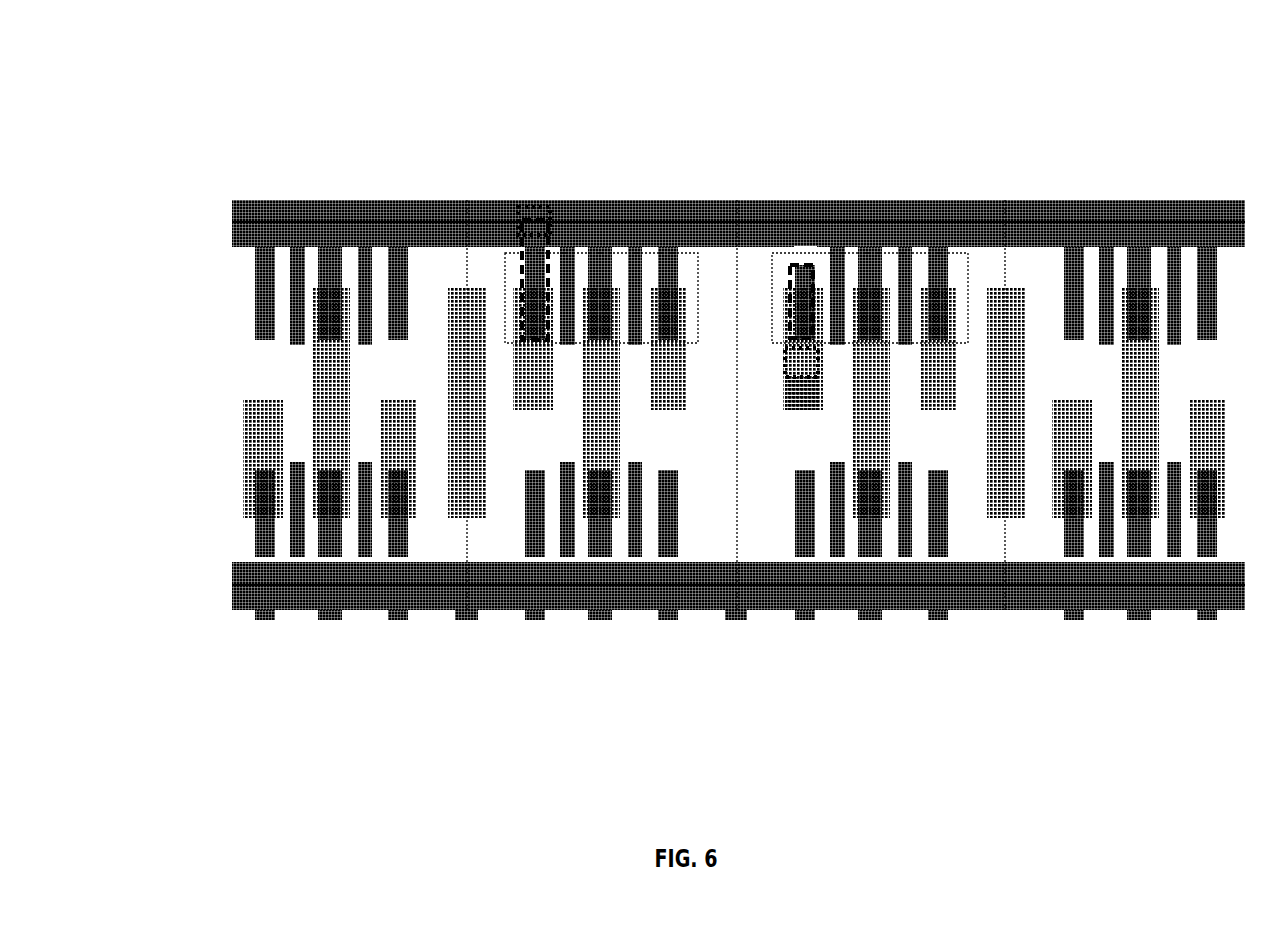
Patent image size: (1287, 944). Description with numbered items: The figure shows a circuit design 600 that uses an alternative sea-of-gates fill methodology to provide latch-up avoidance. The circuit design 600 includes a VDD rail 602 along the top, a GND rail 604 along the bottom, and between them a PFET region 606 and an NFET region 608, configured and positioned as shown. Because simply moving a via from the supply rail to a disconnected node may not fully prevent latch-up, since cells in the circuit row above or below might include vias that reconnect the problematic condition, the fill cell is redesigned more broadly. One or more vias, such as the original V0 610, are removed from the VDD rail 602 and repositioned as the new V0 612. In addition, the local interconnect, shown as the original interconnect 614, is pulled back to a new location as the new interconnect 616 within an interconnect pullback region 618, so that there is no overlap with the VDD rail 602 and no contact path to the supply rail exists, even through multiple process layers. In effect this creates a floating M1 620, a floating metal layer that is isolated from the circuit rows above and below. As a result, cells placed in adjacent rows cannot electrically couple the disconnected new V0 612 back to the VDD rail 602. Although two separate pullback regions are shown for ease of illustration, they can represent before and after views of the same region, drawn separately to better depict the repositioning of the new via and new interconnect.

The circuit design 600 is at (654, 377).
The VDD rail 602 is at (232, 215).
The GND rail 604 is at (232, 578).
The PFET region 606 is at (222, 382).
The NFET region 608 is at (222, 560).
The original V0 610 is at (536, 207).
The new V0 612 is at (800, 350).
The original interconnect 614 is at (522, 278).
The new interconnect 616 is at (813, 282).
The interconnect pullback region 618 is at (573, 343).
The floating M1 620 is at (812, 395).